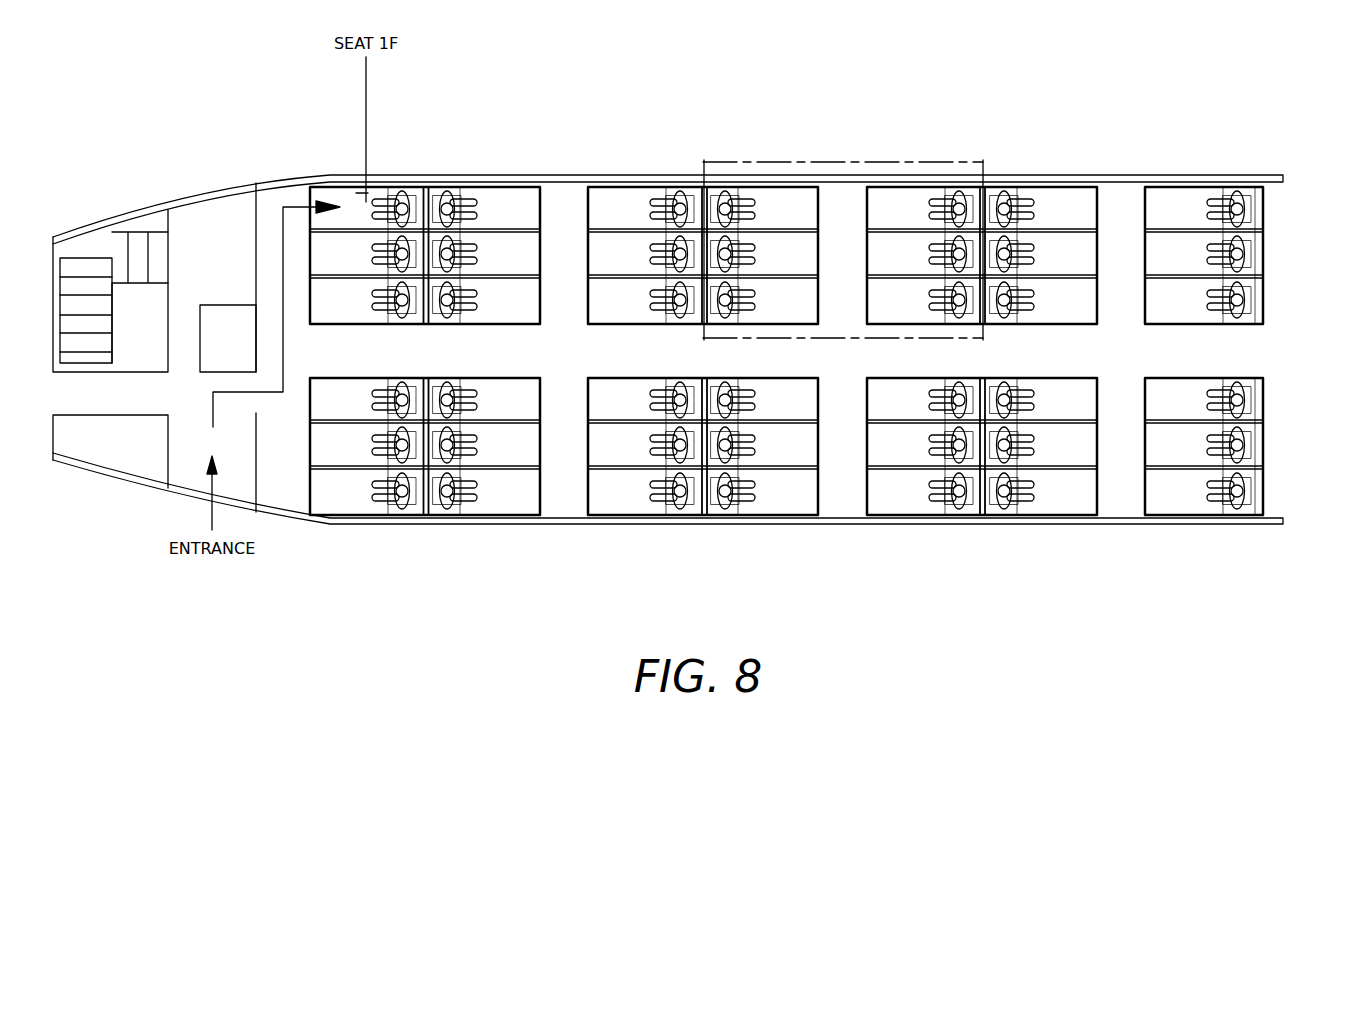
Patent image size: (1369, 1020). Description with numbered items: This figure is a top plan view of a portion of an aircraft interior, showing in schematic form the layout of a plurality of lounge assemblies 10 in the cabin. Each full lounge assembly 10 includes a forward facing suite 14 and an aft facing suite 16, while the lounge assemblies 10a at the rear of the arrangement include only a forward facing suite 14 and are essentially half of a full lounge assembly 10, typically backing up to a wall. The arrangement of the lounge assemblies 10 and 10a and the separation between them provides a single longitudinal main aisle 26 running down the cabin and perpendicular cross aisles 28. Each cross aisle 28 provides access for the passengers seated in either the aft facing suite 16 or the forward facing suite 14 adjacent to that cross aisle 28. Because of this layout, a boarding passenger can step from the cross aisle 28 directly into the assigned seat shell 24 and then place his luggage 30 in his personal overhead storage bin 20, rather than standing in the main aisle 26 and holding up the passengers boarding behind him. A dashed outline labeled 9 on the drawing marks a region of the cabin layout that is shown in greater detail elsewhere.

The section of FIG. 9 is at (843, 162).
The lounge assembly 10 is at (703, 351).
The lounge assembly 10a is at (1205, 352).
The forward facing suite 14 is at (623, 198).
The aft facing suite 16 is at (776, 198).
The overhead storage bin 20 is at (395, 195).
The seat shell 24 is at (362, 195).
The main aisle 26 is at (474, 361).
The cross aisle 28 is at (270, 210).
The luggage 30 is at (420, 197).